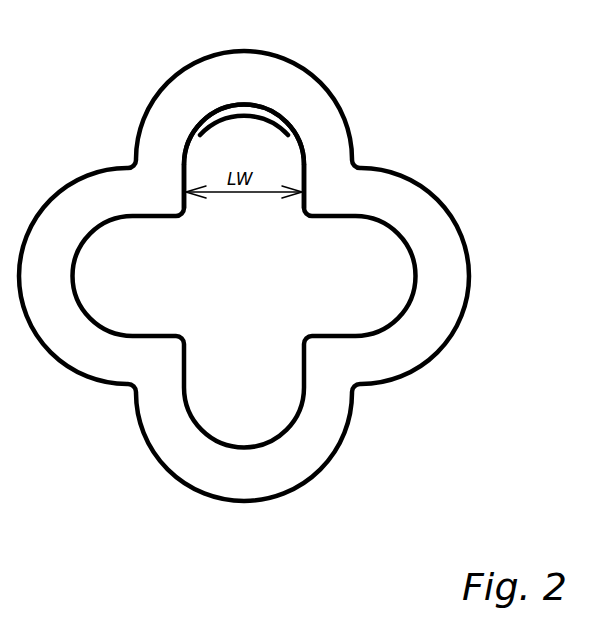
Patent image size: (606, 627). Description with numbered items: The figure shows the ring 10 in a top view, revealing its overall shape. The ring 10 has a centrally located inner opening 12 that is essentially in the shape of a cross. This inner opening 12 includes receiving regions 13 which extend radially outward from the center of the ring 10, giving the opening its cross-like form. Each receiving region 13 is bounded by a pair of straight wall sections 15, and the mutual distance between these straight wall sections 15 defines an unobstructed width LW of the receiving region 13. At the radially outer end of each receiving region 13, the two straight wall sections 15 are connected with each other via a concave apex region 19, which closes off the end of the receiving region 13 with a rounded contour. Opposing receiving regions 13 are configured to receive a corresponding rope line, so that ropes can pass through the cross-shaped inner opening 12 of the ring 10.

The ring 10 is at (455, 220).
The inner opening 12 is at (270, 272).
The receiving region 13 is at (258, 133).
The straight wall section 15 is at (303, 172).
The concave apex region 19 is at (282, 108).